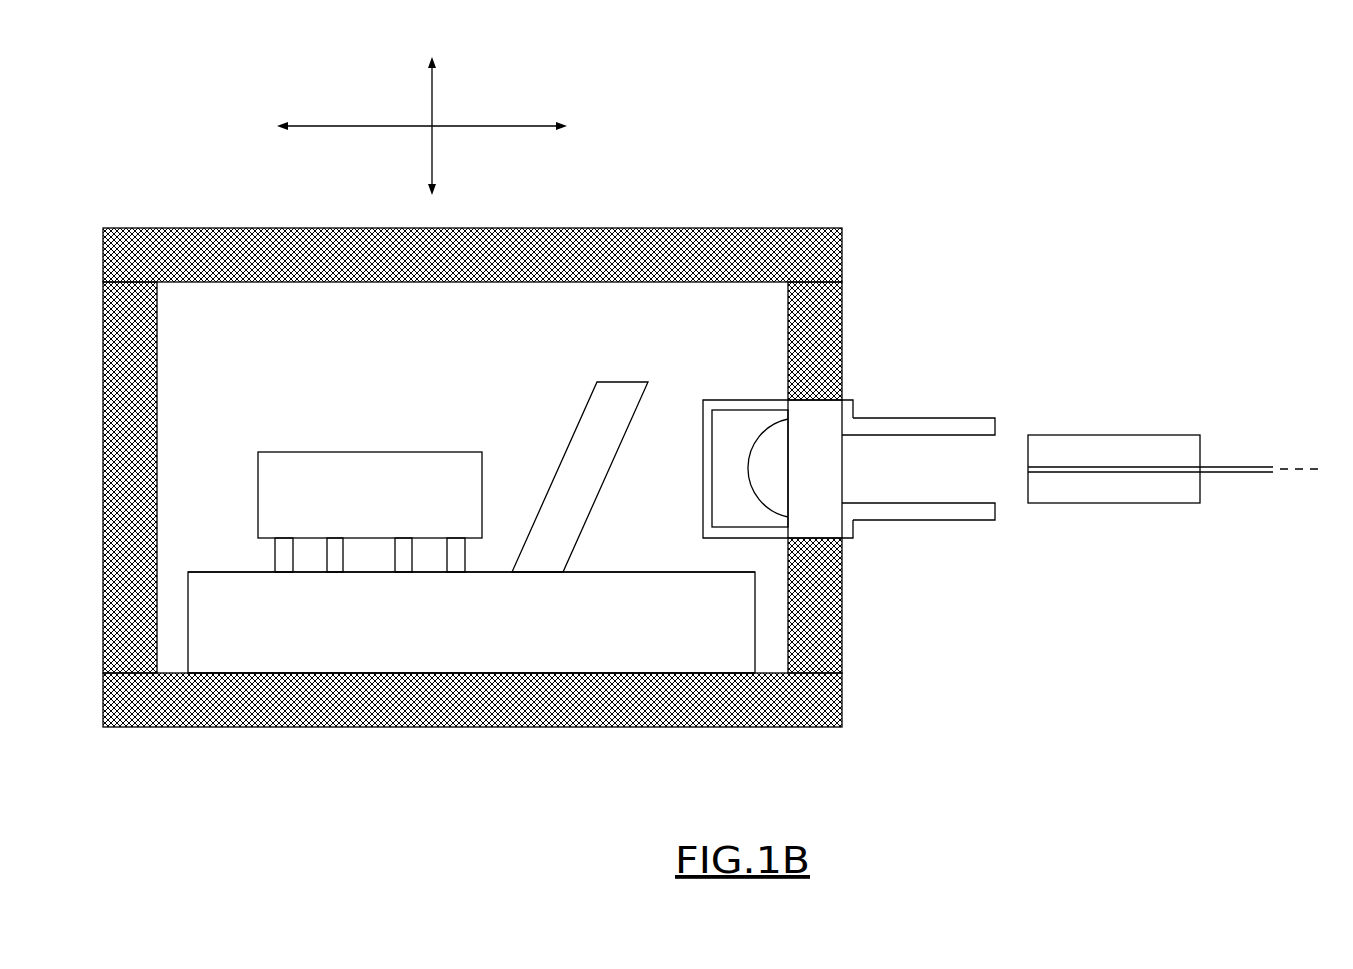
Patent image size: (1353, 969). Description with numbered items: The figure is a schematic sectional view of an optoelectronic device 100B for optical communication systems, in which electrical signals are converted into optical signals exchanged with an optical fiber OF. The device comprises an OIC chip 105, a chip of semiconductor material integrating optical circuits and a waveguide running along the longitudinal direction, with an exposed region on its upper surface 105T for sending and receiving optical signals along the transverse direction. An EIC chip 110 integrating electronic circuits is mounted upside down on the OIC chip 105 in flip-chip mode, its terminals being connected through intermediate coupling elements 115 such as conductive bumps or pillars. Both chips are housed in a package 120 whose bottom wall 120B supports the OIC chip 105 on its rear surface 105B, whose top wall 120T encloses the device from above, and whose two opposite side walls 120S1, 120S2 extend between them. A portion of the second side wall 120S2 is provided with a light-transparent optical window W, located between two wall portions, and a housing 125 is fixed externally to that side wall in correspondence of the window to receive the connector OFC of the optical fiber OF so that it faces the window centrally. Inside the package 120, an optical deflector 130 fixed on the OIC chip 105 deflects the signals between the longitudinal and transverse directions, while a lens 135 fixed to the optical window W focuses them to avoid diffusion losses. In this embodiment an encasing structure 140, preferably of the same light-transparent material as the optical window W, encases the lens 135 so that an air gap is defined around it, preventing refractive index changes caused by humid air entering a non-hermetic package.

The optoelectronic device 100B is at (1139, 149).
The OIC chip 105 is at (471, 622).
The upper surface of the OIC chip 105T is at (618, 573).
The rear surface of the OIC chip 105B is at (271, 673).
The EIC chip 110 is at (312, 452).
The intermediate coupling elements 115 is at (270, 566).
The package 120 is at (535, 451).
The top wall 120T is at (842, 250).
The bottom wall 120B is at (842, 712).
The first side wall 120S1 is at (157, 406).
The second side wall 120S2 is at (842, 644).
The housing 125 is at (919, 418).
The optical deflector 130 is at (585, 415).
The lens 135 is at (745, 433).
The encasing structure 140 is at (703, 470).
The optical window W is at (822, 487).
The connector of the optical fiber OFC is at (1077, 435).
The optical fiber OF is at (1250, 473).